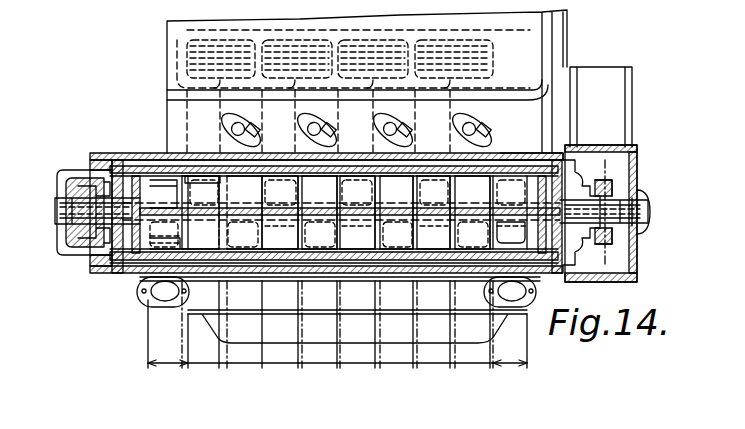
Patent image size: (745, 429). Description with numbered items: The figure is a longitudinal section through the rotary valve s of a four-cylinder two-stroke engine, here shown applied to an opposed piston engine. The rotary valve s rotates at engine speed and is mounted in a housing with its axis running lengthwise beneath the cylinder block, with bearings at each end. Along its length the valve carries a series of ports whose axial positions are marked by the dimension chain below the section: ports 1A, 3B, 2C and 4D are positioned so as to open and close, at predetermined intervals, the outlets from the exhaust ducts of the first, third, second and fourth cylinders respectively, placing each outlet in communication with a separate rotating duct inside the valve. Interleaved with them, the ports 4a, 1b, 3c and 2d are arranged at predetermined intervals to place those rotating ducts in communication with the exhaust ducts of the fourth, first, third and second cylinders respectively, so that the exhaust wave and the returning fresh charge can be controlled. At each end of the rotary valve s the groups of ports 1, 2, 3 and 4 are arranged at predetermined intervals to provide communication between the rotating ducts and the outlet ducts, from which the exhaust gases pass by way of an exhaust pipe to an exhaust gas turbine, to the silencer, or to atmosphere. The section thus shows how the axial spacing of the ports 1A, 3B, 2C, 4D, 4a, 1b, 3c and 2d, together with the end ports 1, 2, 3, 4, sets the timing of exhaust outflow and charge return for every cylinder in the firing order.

The port 1 is at (206, 250).
The port 2 is at (304, 155).
The port 3 is at (380, 155).
The port 4 is at (494, 250).
The port 4a is at (182, 363).
The port 4D is at (254, 366).
The port 3c is at (298, 363).
The port 3B is at (329, 366).
The port 2d is at (367, 366).
The port 2C is at (405, 366).
The port 1b is at (442, 366).
The port 1A is at (482, 366).
The rotary valve S is at (530, 157).